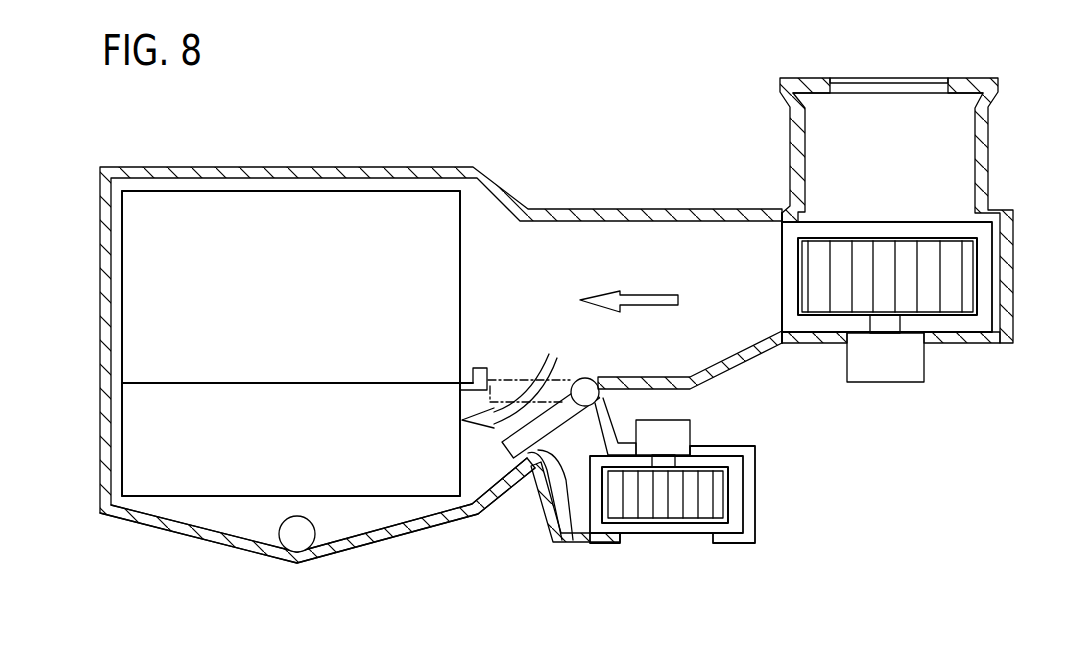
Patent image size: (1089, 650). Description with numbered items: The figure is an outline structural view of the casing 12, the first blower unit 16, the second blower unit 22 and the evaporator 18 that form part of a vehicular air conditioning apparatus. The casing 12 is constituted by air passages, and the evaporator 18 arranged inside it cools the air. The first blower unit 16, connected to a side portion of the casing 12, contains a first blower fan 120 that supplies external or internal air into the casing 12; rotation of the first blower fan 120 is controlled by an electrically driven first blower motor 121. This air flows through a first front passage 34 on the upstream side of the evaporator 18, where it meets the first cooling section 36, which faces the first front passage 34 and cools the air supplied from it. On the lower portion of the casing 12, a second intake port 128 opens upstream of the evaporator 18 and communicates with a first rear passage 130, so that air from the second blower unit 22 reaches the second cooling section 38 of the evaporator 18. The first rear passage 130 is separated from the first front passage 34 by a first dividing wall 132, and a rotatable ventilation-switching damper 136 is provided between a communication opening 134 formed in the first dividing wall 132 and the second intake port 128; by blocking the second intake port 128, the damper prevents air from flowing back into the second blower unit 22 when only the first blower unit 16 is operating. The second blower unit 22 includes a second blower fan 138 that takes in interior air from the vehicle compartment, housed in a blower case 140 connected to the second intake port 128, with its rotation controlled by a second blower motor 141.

The casing 12 is at (345, 169).
The first blower unit 16 is at (1016, 270).
The evaporator 18 is at (210, 190).
The second blower unit 22 is at (608, 547).
The first front passage 34 is at (635, 250).
The first cooling section 36 is at (145, 252).
The second cooling section 38 is at (145, 413).
The first blower fan 120 is at (884, 245).
The first blower motor 121 is at (884, 372).
The second intake port 128 is at (549, 518).
The first rear passage 130 is at (473, 477).
The first dividing wall 132 is at (648, 377).
The communication opening 134 is at (498, 378).
The ventilation-switching damper 136 is at (549, 423).
The second blower fan 138 is at (661, 510).
The blower case 140 is at (746, 543).
The second blower motor 141 is at (670, 420).